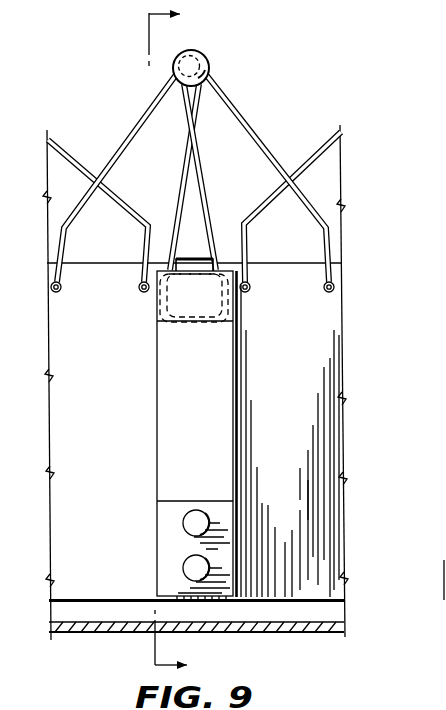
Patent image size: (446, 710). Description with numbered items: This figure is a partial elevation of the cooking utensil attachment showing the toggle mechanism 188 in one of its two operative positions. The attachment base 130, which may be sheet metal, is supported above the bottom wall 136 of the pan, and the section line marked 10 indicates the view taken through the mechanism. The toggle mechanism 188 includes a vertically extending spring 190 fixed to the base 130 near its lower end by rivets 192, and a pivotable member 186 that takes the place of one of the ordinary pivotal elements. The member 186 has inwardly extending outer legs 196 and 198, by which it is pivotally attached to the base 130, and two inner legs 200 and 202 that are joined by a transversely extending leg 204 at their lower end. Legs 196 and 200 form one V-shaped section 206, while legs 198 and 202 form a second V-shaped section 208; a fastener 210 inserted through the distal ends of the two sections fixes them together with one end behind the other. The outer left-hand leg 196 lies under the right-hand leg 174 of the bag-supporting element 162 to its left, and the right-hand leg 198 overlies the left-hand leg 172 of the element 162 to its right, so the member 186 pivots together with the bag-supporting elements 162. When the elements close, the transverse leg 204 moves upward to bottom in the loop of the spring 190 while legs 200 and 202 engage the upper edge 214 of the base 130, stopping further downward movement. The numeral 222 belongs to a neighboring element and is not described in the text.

The section line 10- 10 is at (157, 339).
The attachment base 130 is at (346, 378).
The bottom wall 136 is at (291, 633).
The bag-supporting elements 162 is at (62, 140).
The left-hand leg 172 is at (312, 172).
The right-hand leg 174 is at (75, 160).
The pivotable member 186 is at (241, 90).
The toggle mechanism 188 is at (205, 42).
The spring 190 is at (157, 427).
The rivets 192 is at (185, 560).
The outer left-hand leg 196 is at (82, 213).
The outer right-hand leg 198 is at (310, 200).
The inner leg 200 is at (186, 150).
The inner leg 202 is at (202, 168).
The transversely extending leg 204 is at (192, 326).
The V-shaped section 206 is at (182, 178).
The V-shaped section 208 is at (198, 147).
The fastener 210 is at (176, 52).
The upper edge 214 is at (84, 263).
The adjacent element 222 is at (66, 709).